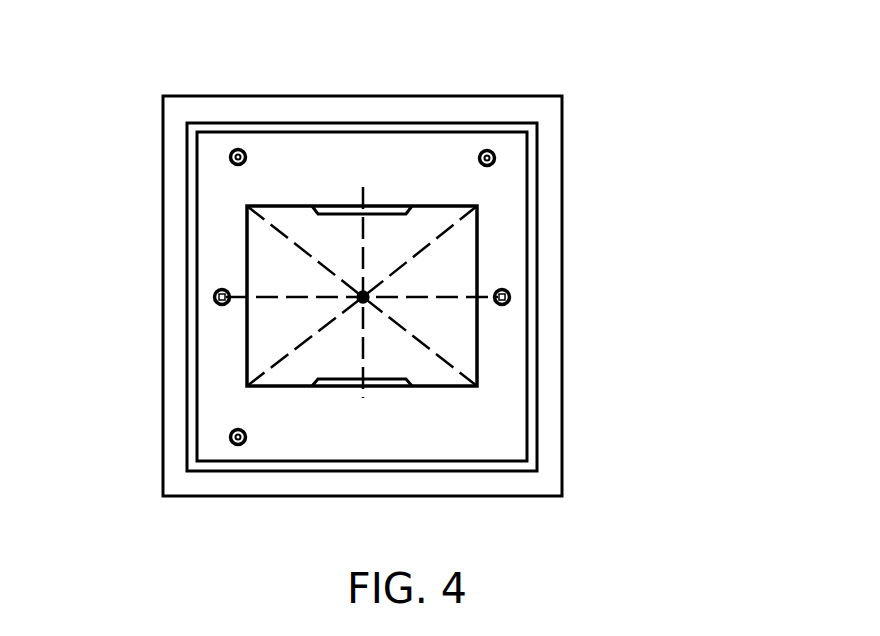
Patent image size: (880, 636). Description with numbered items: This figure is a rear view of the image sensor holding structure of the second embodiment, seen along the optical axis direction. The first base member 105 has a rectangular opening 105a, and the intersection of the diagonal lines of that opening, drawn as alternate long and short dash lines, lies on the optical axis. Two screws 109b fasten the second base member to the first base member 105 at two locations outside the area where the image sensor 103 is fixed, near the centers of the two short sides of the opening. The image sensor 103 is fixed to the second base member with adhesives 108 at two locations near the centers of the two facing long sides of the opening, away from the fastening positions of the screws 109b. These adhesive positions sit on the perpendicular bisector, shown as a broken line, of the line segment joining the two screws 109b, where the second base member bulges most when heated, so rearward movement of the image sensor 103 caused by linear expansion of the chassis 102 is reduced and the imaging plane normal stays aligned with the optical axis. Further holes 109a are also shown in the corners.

The chassis 102 is at (367, 112).
The image sensor 103 is at (410, 287).
The first base member 105 is at (507, 423).
The rectangular opening 105a is at (477, 323).
The adhesives 108 is at (370, 207).
The corner fastening holes 109a is at (228, 157).
The screws 109b is at (213, 297).